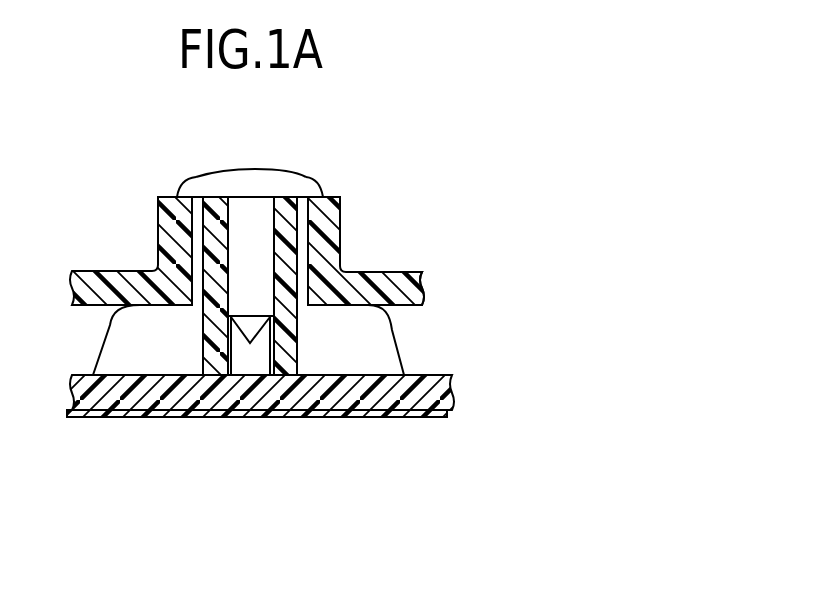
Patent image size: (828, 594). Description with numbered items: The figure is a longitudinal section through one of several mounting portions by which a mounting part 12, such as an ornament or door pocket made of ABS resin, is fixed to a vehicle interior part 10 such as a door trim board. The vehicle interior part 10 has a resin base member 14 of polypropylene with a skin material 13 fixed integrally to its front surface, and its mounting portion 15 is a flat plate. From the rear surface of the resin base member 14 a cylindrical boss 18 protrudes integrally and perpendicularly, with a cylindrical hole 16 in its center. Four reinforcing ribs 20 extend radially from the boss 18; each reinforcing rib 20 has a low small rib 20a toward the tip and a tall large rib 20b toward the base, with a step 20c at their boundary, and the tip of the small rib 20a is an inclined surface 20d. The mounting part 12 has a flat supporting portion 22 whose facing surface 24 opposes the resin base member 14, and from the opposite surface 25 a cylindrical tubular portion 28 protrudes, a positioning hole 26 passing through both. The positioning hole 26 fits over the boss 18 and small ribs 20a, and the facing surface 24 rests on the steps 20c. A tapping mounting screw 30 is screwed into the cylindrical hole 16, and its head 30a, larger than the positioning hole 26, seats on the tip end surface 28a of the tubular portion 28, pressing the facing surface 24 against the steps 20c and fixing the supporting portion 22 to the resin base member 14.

The vehicle interior part 10 is at (128, 453).
The mounting part 12 is at (425, 230).
The skin material 13 is at (97, 413).
The resin base member 14 is at (92, 395).
The mounting portion 15 is at (331, 424).
The cylindrical hole 16 is at (230, 362).
The cylindrical boss 18 is at (281, 210).
The reinforcing rib 20 is at (80, 352).
The small rib 20a is at (300, 242).
The large rib 20b is at (380, 350).
The step 20c is at (347, 290).
The inclined surface 20d is at (309, 213).
The supporting portion 22 is at (87, 275).
The facing surface 24 is at (110, 325).
The surface 25 is at (107, 272).
The positioning hole 26 is at (194, 220).
The tubular portion 28 is at (156, 228).
The tip end surface 28a is at (190, 197).
The mounting screw 30 is at (250, 168).
The head 30a is at (232, 180).